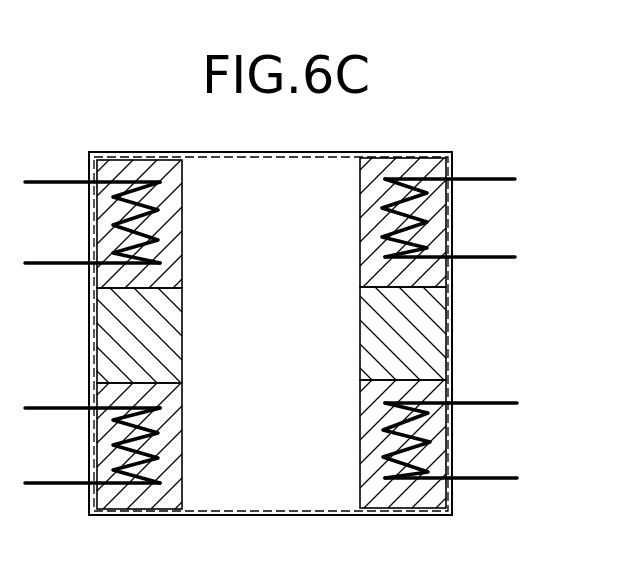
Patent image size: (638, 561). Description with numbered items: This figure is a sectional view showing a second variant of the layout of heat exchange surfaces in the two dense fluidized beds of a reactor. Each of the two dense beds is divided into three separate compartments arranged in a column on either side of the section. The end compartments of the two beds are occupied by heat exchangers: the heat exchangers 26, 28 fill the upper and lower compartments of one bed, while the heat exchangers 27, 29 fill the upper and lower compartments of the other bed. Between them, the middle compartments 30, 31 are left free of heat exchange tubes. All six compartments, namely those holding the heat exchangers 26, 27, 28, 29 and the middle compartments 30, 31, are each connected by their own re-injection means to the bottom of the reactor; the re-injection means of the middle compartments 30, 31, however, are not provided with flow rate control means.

The heat exchanger 26 is at (148, 226).
The heat exchanger 27 is at (380, 218).
The heat exchanger 28 is at (155, 445).
The heat exchanger 29 is at (393, 440).
The middle compartment 30 is at (132, 322).
The middle compartment 31 is at (415, 335).